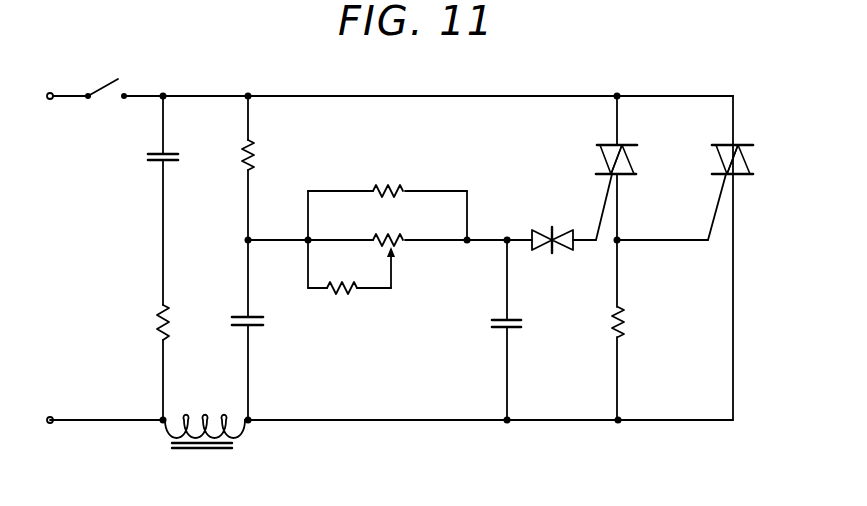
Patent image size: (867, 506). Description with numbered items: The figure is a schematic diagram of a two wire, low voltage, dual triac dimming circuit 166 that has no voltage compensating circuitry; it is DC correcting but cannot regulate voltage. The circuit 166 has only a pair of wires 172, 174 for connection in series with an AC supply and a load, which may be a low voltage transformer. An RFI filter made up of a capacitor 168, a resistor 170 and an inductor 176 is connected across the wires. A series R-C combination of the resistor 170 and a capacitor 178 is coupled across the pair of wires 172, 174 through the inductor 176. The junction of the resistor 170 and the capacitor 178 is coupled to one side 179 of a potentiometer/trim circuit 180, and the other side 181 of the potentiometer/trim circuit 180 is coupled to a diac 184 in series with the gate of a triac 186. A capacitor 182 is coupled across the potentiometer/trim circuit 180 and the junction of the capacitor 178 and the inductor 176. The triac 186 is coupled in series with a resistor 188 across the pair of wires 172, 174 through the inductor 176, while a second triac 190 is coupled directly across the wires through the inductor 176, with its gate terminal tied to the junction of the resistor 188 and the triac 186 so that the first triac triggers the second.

The dimming circuit 166 is at (585, 81).
The capacitor 168 is at (152, 168).
The resistor 170 is at (249, 138).
The wire 172 is at (146, 95).
The wire 174 is at (106, 421).
The inductor 176 is at (198, 449).
The capacitor 178 is at (258, 327).
The one side of potentiometer/trim circuit 179 is at (307, 239).
The potentiometer/trim circuit 180 is at (382, 187).
The other side of potentiometer/trim circuit 181 is at (468, 238).
The capacitor 182 is at (498, 333).
The diac 184 is at (562, 253).
The triac 186 is at (628, 155).
The resistor 188 is at (630, 322).
The triac 190 is at (745, 160).